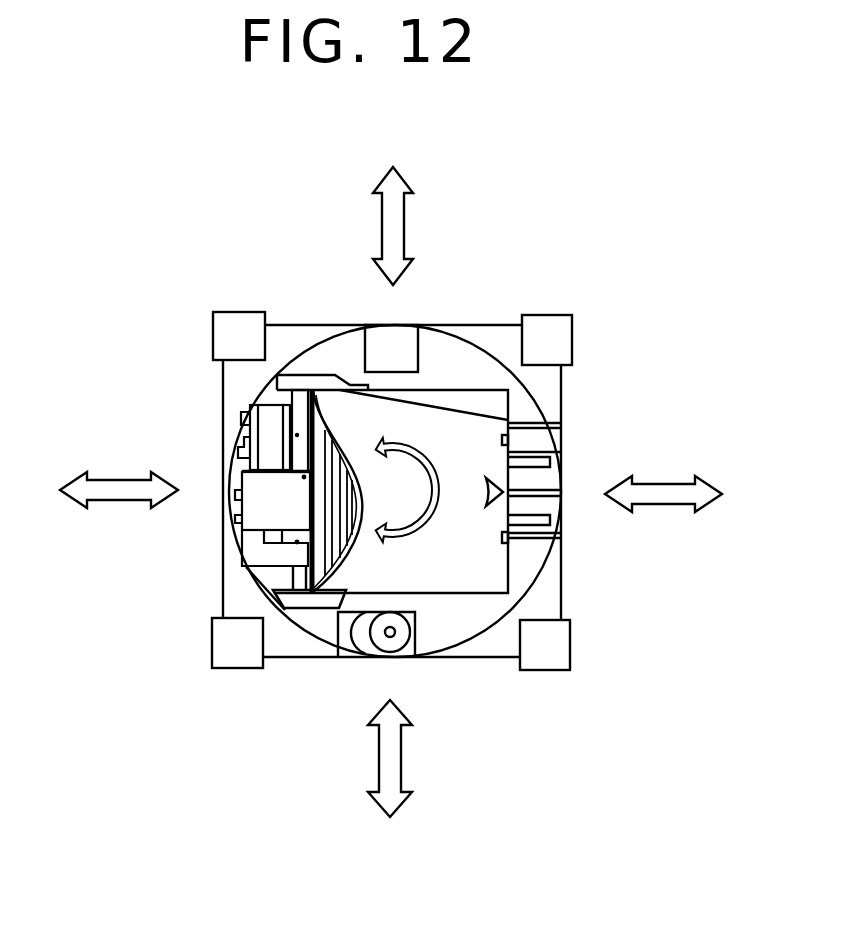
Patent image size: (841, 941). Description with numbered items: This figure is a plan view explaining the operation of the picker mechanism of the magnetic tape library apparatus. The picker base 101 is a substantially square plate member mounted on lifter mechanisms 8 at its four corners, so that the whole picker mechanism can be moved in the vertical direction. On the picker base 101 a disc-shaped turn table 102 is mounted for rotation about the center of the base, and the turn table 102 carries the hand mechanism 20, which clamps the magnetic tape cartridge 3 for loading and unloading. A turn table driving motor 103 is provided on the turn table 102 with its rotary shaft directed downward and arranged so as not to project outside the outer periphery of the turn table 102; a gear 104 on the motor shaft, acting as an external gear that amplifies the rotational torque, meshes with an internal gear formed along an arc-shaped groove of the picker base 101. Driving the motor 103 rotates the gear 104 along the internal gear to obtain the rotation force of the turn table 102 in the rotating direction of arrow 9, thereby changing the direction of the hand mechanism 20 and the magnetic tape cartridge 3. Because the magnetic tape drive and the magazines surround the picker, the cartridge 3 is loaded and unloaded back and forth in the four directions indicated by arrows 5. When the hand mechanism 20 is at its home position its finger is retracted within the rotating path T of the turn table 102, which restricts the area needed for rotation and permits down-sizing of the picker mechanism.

The magnetic tape cartridge 3 is at (515, 413).
The arrow 5 is at (382, 228).
The lifter mechanism 8 is at (213, 334).
The arrow 9 is at (440, 471).
The hand mechanism 20 is at (243, 556).
The picker base 101 is at (233, 400).
The turn table 102 is at (460, 352).
The turn table driving motor 103 is at (400, 648).
The gear 104 is at (360, 658).
The rotating path T is at (493, 650).